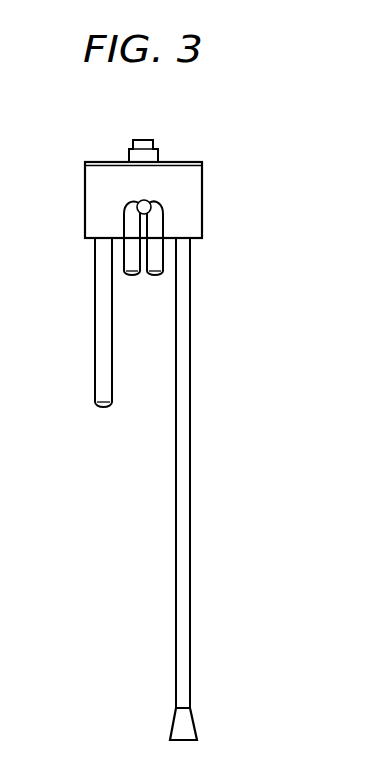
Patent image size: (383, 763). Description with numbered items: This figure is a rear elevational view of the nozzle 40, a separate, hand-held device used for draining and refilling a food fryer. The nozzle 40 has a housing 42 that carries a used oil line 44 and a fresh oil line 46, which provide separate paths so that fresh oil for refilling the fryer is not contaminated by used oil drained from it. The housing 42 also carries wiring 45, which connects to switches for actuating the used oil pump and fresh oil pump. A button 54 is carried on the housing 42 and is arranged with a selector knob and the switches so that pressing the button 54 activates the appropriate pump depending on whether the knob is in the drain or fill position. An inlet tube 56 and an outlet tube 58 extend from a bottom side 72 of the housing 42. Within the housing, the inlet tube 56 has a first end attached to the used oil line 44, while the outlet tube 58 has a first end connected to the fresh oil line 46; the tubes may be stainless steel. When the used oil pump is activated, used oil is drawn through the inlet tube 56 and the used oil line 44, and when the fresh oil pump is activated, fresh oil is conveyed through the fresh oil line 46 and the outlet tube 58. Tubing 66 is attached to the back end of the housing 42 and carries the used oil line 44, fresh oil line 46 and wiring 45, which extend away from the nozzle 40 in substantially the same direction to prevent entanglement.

The nozzle 40 is at (222, 155).
The housing 42 is at (85, 183).
The used oil line 44 is at (156, 266).
The wiring 45 is at (152, 203).
The fresh oil line 46 is at (130, 249).
The button 54 is at (137, 140).
The inlet tube 56 is at (182, 353).
The outlet tube 58 is at (103, 350).
The tubing 66 is at (127, 202).
The bottom side 72 is at (198, 240).